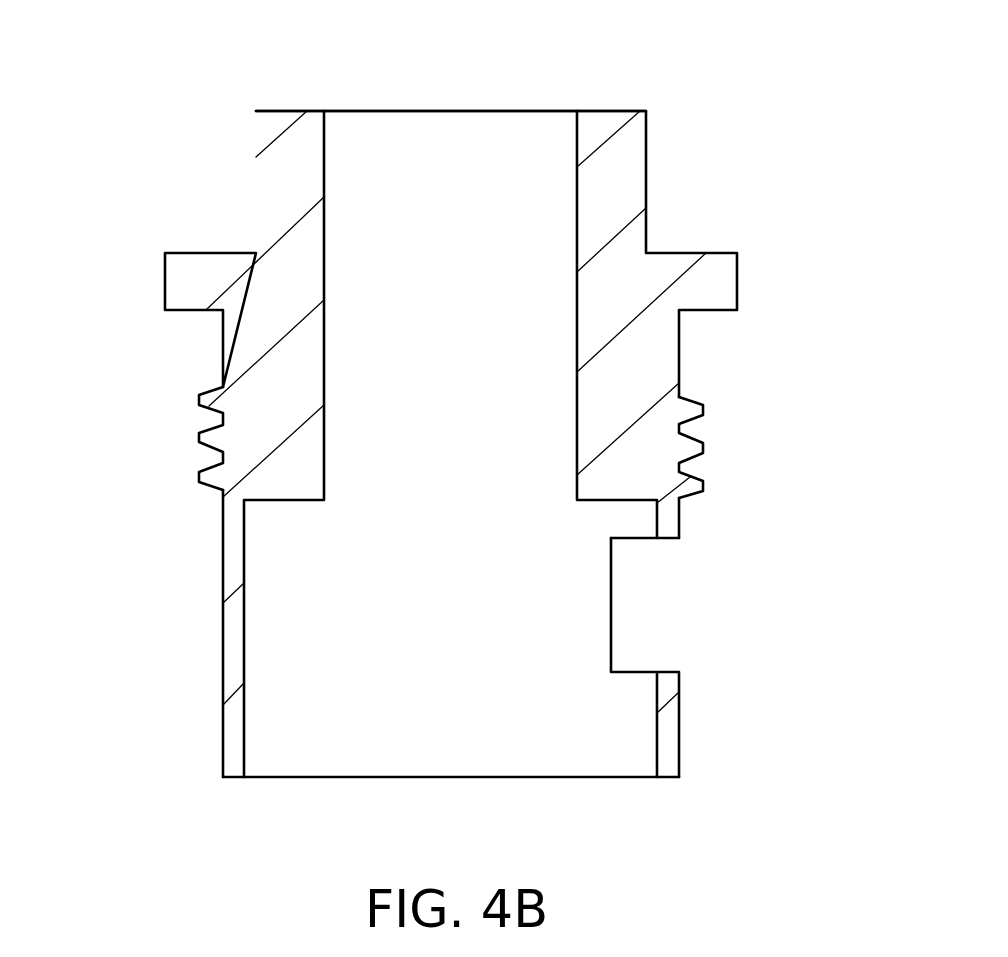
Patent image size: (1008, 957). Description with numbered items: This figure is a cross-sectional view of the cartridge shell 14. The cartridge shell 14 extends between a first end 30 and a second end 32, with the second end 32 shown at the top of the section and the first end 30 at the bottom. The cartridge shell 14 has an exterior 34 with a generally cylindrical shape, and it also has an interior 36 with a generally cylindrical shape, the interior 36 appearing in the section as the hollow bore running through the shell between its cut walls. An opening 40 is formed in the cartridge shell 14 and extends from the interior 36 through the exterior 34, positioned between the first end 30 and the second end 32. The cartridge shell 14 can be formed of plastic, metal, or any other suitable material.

The cartridge shell 14 is at (646, 148).
The first end 30 is at (223, 777).
The second end 32 is at (256, 111).
The exterior 34 is at (679, 362).
The interior 36 is at (577, 661).
The opening 40 is at (665, 571).